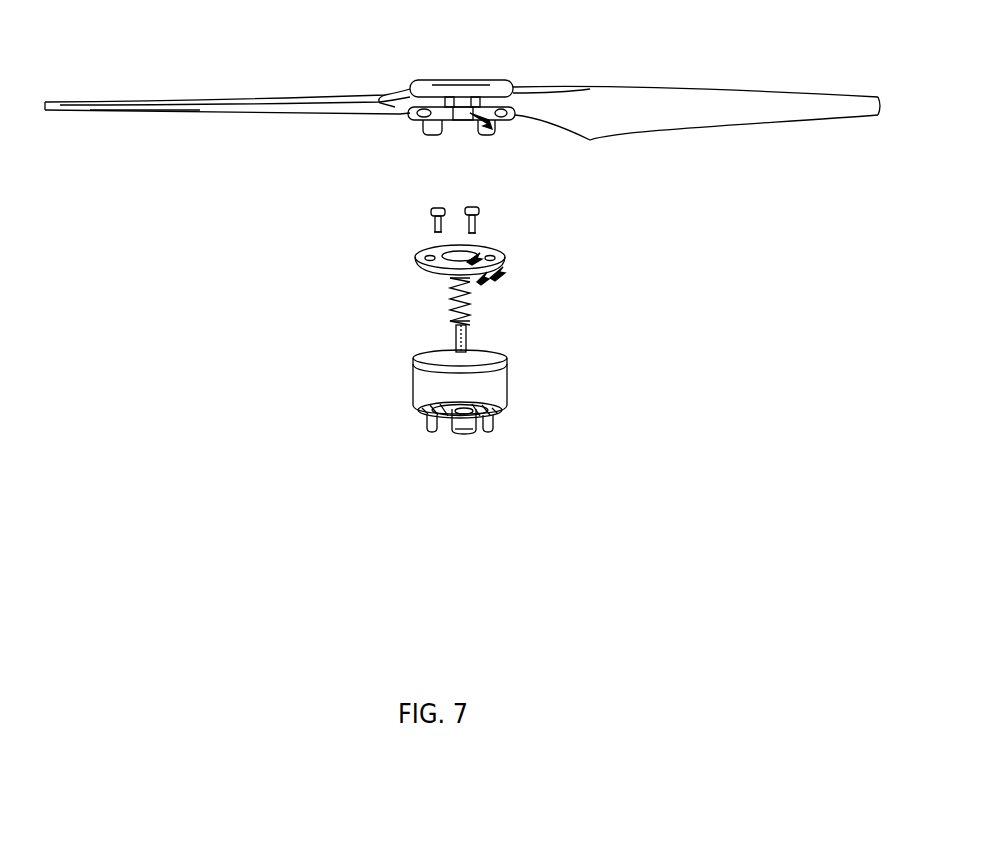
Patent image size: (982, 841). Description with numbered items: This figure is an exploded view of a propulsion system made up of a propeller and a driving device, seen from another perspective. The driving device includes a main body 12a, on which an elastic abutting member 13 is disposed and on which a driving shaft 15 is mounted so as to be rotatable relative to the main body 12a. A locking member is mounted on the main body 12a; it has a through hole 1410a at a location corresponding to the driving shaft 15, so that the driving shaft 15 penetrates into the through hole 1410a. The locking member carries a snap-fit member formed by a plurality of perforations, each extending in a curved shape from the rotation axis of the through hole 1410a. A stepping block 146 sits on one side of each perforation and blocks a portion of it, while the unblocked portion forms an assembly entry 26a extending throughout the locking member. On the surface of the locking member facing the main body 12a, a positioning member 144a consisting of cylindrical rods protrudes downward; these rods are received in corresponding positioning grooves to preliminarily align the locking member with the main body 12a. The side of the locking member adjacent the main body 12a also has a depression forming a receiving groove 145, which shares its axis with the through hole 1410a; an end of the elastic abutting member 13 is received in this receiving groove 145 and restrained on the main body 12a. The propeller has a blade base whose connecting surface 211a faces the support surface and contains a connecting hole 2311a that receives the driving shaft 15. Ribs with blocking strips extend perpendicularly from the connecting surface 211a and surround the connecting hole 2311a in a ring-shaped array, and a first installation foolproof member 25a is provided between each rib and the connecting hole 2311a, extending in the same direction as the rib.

The connecting surface 211a is at (508, 85).
The first installation foolproof member 25a is at (427, 133).
The connecting hole 2311a is at (490, 125).
The through hole 1410a is at (492, 248).
The stepping block 146 is at (480, 256).
The assembly entry 26a is at (482, 264).
The positioning block 145 is at (500, 277).
The positioning member 144a is at (487, 283).
The elastic abutting member 13 is at (445, 303).
The driving shaft 15 is at (442, 342).
The main body 12a is at (433, 377).